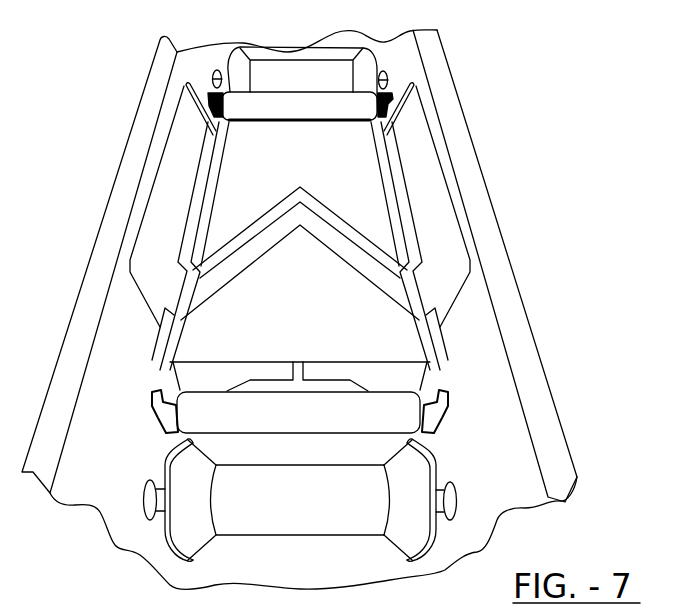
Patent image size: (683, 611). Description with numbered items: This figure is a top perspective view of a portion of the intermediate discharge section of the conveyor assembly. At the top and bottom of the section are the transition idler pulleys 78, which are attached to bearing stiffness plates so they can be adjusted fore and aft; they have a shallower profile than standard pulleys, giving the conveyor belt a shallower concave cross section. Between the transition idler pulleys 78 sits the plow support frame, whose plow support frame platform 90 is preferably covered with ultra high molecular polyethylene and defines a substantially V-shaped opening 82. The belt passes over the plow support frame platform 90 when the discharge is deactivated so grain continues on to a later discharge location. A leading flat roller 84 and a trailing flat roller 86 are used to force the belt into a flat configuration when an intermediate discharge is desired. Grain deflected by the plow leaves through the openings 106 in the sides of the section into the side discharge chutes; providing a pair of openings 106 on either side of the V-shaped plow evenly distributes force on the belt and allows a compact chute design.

The transition idler pulleys 78 is at (362, 60).
The leading flat roller 84 is at (360, 103).
The plow support frame platform 90 is at (358, 140).
The V-shaped opening 82 is at (380, 283).
The trailing flat roller 86 is at (393, 398).
The openings 106 is at (172, 180).